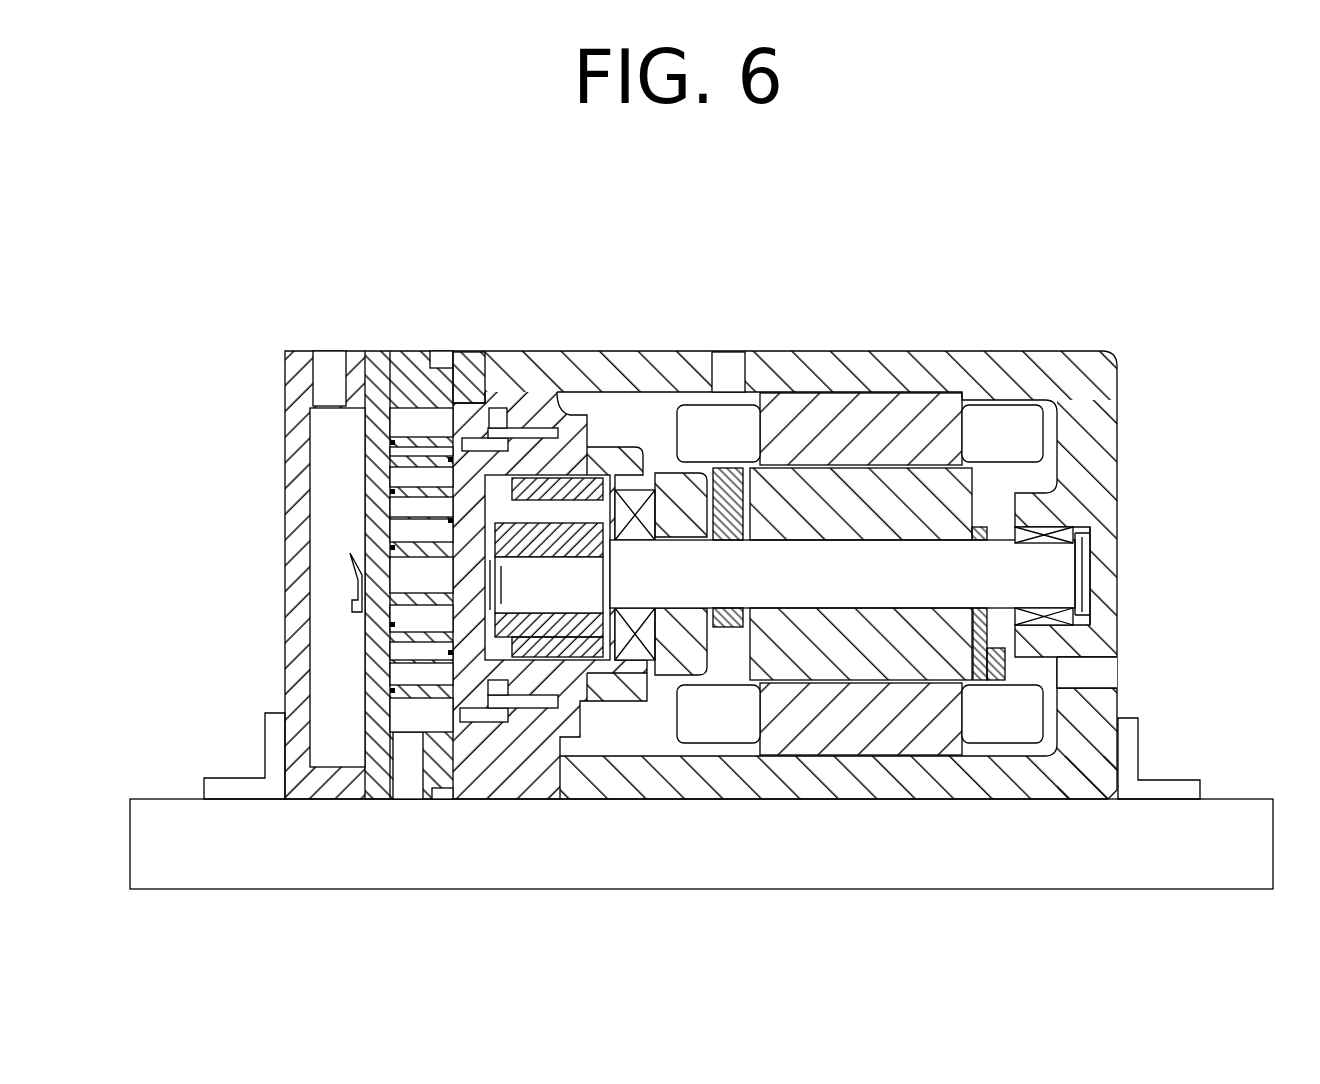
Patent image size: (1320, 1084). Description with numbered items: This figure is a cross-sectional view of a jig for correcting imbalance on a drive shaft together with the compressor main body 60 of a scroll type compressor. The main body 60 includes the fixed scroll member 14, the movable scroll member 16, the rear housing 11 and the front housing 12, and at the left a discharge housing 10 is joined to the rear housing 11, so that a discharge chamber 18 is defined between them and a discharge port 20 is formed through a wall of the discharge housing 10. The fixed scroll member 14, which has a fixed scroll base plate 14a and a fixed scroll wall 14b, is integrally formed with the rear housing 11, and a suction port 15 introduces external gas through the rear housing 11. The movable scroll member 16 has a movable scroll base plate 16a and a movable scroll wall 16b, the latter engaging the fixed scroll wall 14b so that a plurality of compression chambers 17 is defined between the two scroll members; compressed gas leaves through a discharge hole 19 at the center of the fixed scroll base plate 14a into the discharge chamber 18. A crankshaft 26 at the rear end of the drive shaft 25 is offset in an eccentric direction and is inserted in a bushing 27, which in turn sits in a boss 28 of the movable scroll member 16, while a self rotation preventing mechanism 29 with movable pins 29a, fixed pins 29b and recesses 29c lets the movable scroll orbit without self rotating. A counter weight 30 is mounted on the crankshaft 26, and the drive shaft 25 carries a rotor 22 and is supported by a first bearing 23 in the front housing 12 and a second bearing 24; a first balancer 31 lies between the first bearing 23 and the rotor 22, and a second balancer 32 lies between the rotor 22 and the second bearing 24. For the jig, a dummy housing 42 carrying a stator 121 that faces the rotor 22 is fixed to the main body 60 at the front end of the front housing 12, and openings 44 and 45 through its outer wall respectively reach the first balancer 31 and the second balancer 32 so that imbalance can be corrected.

The discharge housing 10 is at (355, 375).
The rear housing 11 is at (392, 375).
The front housing 12 is at (540, 372).
The fixed scroll member 14 is at (420, 516).
The fixed scroll base plate 14a is at (375, 632).
The fixed scroll wall 14b is at (378, 668).
The suction port 15 is at (405, 790).
The movable scroll member 16 is at (463, 378).
The movable scroll base plate 16a is at (380, 700).
The movable scroll wall 16b is at (362, 775).
The compression chambers 17 is at (393, 472).
The discharge chamber 18 is at (325, 432).
The discharge hole 19 is at (375, 577).
The discharge port 20 is at (322, 365).
The rotor 22 is at (890, 500).
The first bearing 23 is at (650, 690).
The second bearing 24 is at (1045, 530).
The drive shaft 25 is at (905, 585).
The crankshaft 26 is at (640, 640).
The bushing 27 is at (583, 590).
The boss 28 is at (545, 690).
The self rotation preventing mechanism 29 is at (520, 434).
The movable pins 29a is at (487, 440).
The fixed pins 29b is at (548, 415).
The recesses 29c is at (520, 432).
The counter weight 30 is at (640, 455).
The first balancer 31 is at (730, 460).
The second balancer 32 is at (988, 668).
The dummy housing 42 is at (1100, 415).
The opening 44 is at (722, 375).
The opening 45 is at (1105, 672).
The compressor main body 60 is at (430, 332).
The stator 121 is at (940, 400).